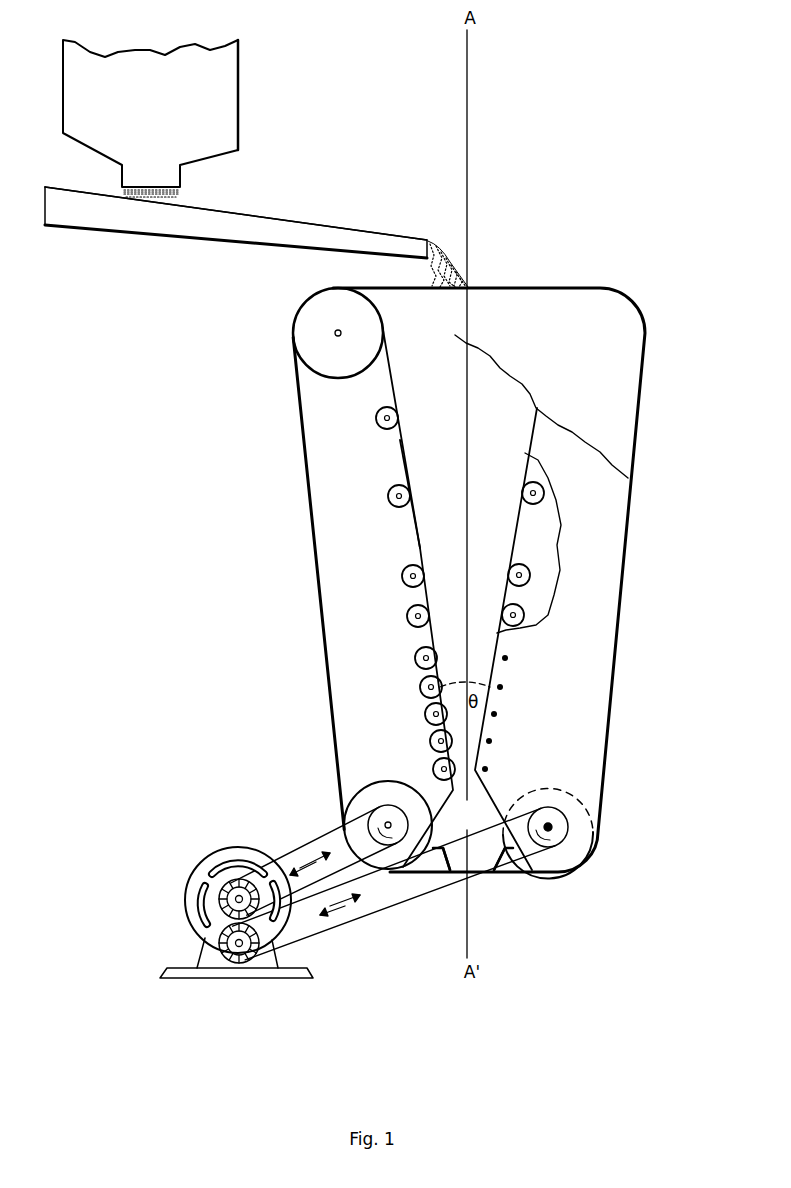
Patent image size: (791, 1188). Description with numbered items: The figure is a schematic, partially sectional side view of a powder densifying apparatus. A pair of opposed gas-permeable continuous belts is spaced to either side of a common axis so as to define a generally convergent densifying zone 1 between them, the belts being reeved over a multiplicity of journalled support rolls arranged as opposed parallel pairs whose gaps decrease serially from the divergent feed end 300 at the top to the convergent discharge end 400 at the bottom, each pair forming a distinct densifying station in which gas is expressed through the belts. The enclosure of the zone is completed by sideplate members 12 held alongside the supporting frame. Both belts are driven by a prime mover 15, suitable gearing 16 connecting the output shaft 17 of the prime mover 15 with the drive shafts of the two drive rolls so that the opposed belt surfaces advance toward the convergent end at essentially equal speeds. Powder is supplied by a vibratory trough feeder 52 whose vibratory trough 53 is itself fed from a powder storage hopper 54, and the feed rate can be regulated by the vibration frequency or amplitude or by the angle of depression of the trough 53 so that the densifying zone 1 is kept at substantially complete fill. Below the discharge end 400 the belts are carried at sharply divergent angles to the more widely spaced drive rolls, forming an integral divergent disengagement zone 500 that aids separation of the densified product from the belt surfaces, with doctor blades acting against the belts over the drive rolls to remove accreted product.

The convergent densifying zone 1 is at (496, 518).
The sideplate member 12 is at (336, 288).
The prime mover 15 is at (207, 855).
The gearing 16 is at (222, 935).
The output shaft 17 is at (220, 885).
The vibratory trough feeder 52 is at (120, 236).
The vibratory trough 53 is at (288, 220).
The powder storage hopper 54 is at (139, 126).
The divergent feed end 300 is at (497, 287).
The convergent discharge end 400 is at (467, 820).
The divergent disengagement zone 500 is at (491, 863).